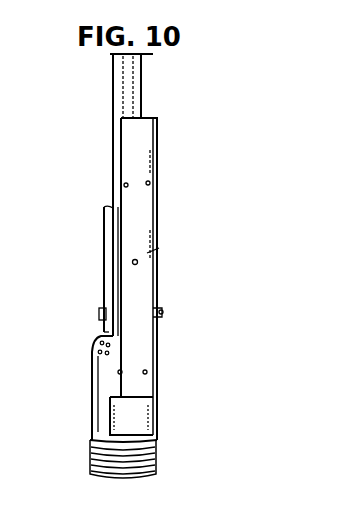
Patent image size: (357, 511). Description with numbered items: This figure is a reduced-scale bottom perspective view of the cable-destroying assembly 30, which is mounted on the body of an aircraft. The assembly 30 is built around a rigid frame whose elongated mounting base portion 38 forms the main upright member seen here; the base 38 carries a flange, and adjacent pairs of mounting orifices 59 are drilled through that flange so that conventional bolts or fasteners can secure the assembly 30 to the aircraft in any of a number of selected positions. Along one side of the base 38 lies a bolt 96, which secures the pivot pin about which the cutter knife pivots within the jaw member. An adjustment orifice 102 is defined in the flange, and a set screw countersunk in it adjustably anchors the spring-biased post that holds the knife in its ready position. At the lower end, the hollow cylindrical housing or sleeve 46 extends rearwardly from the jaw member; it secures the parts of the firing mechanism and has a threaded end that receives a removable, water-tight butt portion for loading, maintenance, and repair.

The assembly 30 is at (193, 113).
The mounting base portion 38 is at (133, 153).
The cylindrical housing or sleeve 46 is at (113, 379).
The mounting orifices 59 is at (126, 185).
The bolt 96 is at (101, 314).
The adjustment orifice 102 is at (136, 262).